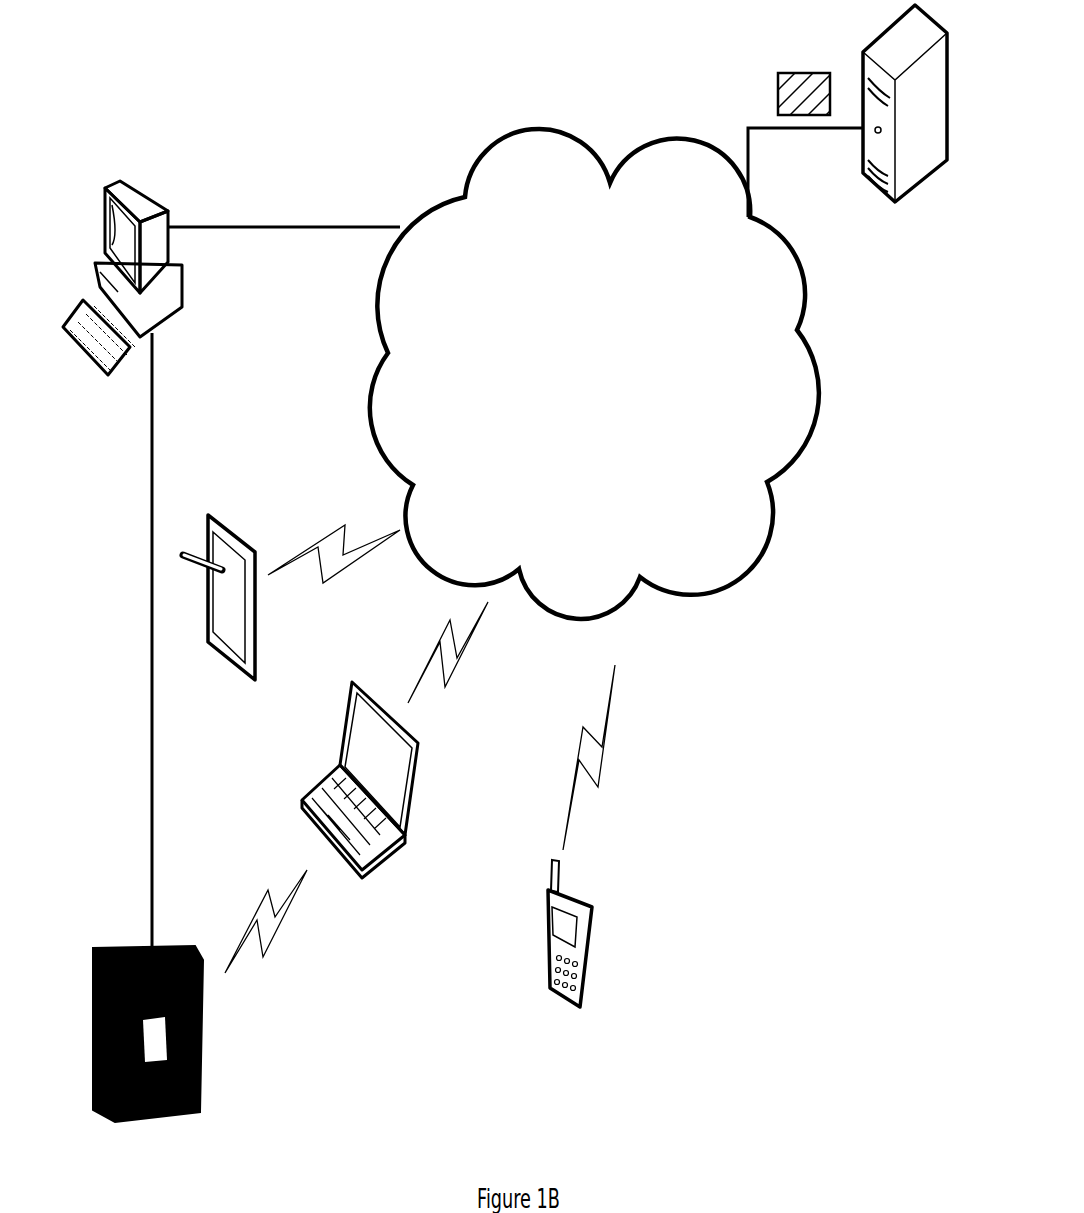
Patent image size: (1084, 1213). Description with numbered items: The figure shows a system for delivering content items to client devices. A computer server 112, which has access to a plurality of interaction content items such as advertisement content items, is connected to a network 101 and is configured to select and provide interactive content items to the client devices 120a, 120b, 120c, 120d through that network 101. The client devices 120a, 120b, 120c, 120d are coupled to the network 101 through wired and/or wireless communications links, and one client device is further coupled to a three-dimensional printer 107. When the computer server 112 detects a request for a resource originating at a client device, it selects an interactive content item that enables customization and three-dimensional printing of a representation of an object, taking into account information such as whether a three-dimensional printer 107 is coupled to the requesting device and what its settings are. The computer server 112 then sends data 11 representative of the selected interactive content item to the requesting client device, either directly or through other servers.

The network 101 is at (596, 596).
The client device 120a is at (128, 183).
The client device 120b is at (230, 520).
The client device 120c is at (335, 860).
The client device 120d is at (588, 903).
The data 11 is at (803, 73).
The computer server 112 is at (883, 197).
The 3-D printer 107 is at (117, 948).